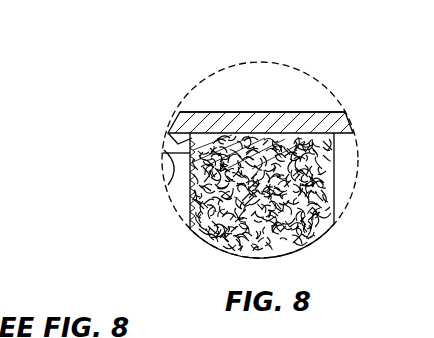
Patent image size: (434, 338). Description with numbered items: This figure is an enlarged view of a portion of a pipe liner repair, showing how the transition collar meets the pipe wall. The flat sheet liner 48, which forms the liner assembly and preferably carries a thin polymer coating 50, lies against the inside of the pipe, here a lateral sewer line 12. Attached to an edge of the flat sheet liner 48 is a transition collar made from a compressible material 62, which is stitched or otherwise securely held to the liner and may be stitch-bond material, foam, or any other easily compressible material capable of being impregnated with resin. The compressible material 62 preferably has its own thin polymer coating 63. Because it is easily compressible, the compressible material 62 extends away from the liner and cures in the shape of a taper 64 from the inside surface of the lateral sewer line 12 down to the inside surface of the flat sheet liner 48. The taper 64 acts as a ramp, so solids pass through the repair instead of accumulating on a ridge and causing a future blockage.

The lateral sewer line 12 is at (258, 110).
The flat sheet liner 48 is at (168, 134).
The thin polymer coating 50 is at (163, 168).
The compressible material 62 is at (334, 192).
The thin polymer coating 63 is at (290, 110).
The taper 64 is at (210, 132).